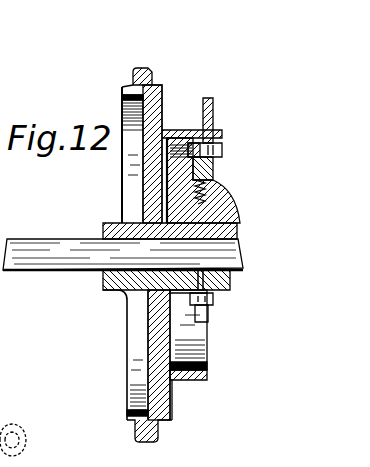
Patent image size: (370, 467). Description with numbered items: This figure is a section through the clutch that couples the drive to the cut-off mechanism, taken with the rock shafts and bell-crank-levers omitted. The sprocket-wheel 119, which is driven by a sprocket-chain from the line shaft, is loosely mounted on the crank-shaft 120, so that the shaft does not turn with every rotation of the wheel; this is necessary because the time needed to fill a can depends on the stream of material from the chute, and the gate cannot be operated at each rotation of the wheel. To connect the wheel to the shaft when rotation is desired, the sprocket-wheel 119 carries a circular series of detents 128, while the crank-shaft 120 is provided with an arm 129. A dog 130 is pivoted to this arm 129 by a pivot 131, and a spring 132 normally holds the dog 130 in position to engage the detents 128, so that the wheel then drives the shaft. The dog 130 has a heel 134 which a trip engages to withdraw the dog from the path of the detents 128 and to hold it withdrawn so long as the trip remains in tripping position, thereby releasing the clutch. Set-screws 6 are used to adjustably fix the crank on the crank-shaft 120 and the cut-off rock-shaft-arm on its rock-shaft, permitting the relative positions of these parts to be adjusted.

The sprocket-wheel 119 is at (158, 430).
The crank-shaft 120 is at (87, 270).
The arm 129 is at (153, 182).
The set-screws 6 is at (148, 320).
The detents 128 is at (185, 320).
The dog 130 is at (192, 122).
The heel 134 is at (202, 105).
The pivot 131 is at (230, 148).
The spring 132 is at (227, 189).